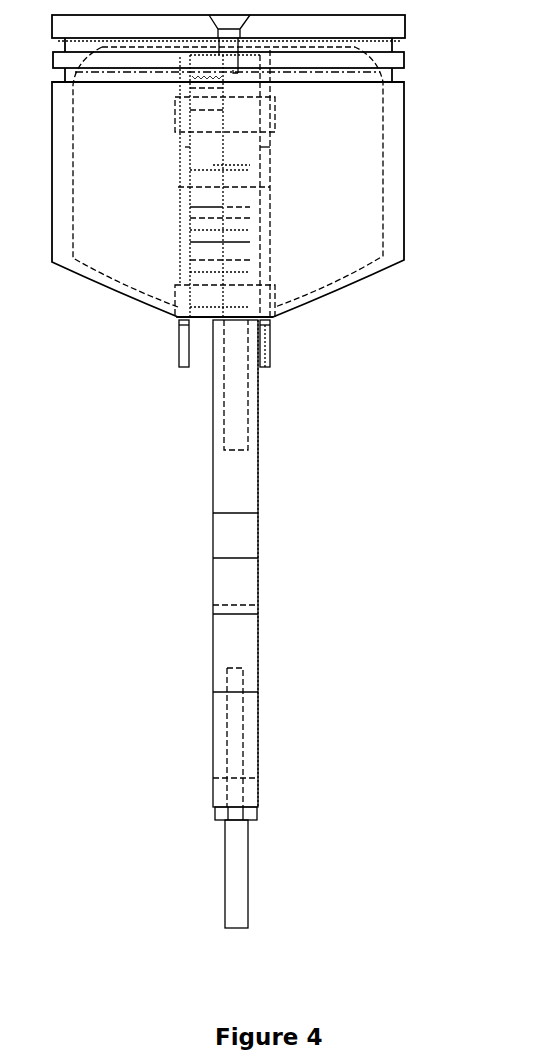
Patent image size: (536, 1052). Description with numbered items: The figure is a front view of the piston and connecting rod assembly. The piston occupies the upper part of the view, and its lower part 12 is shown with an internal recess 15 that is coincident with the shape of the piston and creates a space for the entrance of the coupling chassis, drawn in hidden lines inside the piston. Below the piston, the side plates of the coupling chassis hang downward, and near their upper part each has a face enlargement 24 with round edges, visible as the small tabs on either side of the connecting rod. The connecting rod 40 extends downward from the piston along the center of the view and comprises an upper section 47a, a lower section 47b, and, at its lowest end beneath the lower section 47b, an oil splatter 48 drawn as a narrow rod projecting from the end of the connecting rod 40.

The lower part 12 is at (122, 295).
The internal recess 15 is at (258, 187).
The face enlargement 24 is at (186, 348).
The connecting rod 40 is at (232, 584).
The upper section 47a is at (213, 758).
The lower section 47b is at (212, 795).
The oil splatter 48 is at (238, 868).